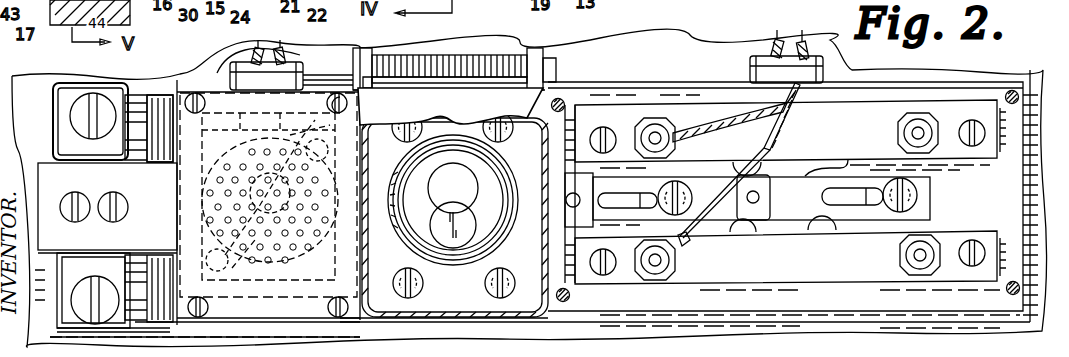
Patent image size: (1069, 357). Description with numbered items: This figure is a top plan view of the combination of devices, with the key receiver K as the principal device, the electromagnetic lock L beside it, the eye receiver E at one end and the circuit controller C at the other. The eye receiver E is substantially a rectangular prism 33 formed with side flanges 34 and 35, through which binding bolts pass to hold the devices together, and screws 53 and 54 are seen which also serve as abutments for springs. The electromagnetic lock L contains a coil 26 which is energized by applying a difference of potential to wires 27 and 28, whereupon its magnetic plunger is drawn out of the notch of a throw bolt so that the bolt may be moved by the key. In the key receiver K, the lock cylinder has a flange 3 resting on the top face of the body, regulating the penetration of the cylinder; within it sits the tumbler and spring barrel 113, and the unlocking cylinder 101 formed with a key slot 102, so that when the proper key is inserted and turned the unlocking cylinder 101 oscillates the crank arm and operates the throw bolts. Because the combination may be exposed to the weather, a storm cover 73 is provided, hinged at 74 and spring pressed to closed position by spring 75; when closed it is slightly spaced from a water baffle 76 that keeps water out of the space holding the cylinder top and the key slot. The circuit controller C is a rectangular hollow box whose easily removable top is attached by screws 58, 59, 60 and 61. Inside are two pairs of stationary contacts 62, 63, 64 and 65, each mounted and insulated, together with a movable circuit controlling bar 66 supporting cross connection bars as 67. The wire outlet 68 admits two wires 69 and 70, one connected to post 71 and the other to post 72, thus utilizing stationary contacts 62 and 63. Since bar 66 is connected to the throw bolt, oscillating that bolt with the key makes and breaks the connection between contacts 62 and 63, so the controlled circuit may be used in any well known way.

The flange 3 is at (402, 163).
The coil 26 is at (200, 212).
The wire 27 is at (304, 64).
The wire 28 is at (276, 84).
The rectangular prism 33 is at (76, 121).
The side flange 34 is at (163, 100).
The side flange 35 is at (170, 312).
The screw 53 is at (86, 216).
The screw 54 is at (122, 202).
The screw 58 is at (566, 104).
The screw 59 is at (1013, 90).
The screw 60 is at (565, 302).
The screw 61 is at (1012, 296).
The stationary contact 62 is at (740, 226).
The stationary contact 63 is at (745, 170).
The stationary contact 64 is at (826, 168).
The stationary contact 65 is at (824, 225).
The movable circuit controlling bar 66 is at (920, 195).
The cross connection bar 67 is at (762, 198).
The wire outlet 68 is at (752, 62).
The wire 69 is at (805, 36).
The wire 70 is at (777, 30).
The post 71 is at (658, 130).
The post 72 is at (677, 263).
The storm cover 73 is at (468, 55).
The hinge 74 is at (545, 62).
The spring 75 is at (503, 60).
The water baffle 76 is at (430, 312).
The unlocking cylinder 101 is at (440, 225).
The key slot 102 is at (468, 230).
The tumbler and spring barrel 113 is at (450, 175).
The circuit controller C is at (951, 90).
The eye receiver E is at (58, 140).
The key receiver K is at (527, 96).
The electromagnetic lock L is at (274, 306).